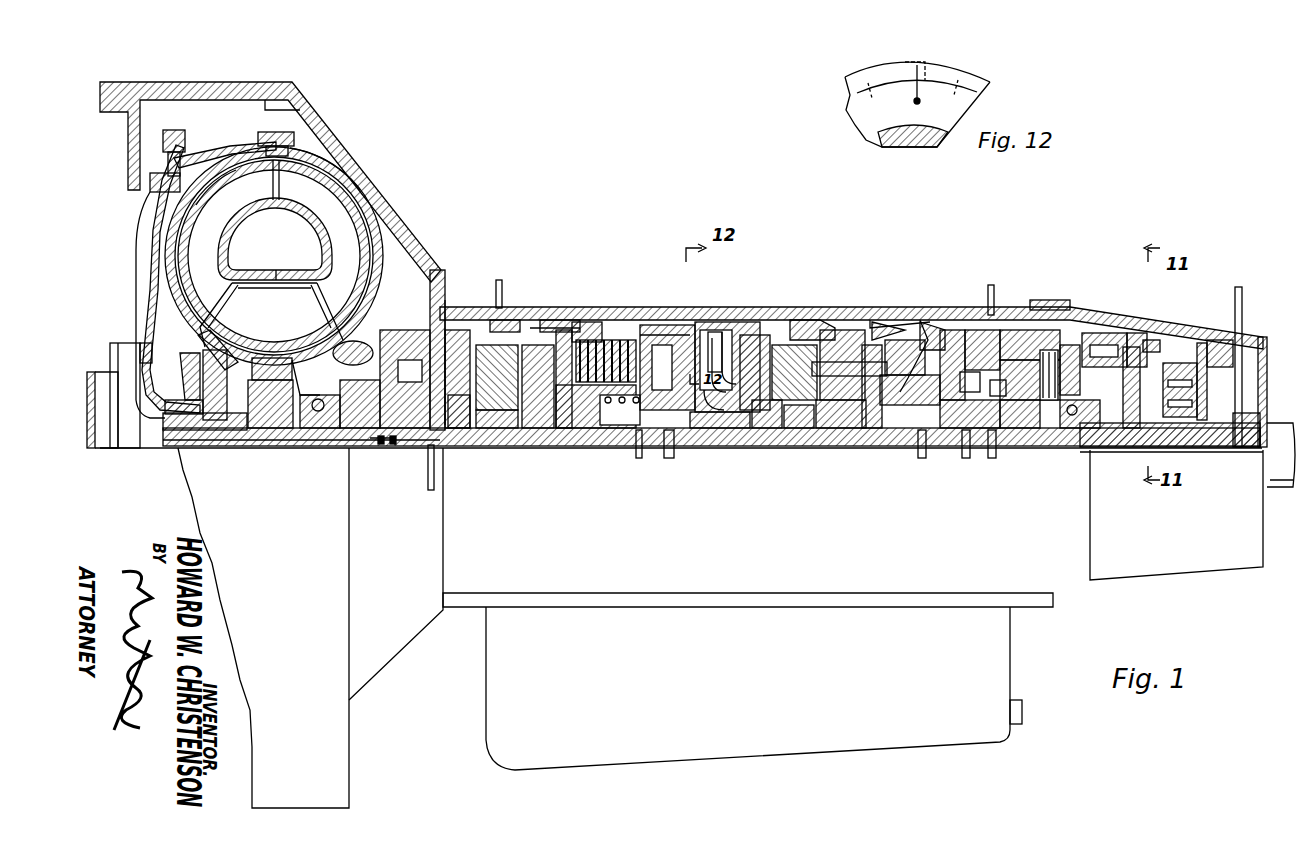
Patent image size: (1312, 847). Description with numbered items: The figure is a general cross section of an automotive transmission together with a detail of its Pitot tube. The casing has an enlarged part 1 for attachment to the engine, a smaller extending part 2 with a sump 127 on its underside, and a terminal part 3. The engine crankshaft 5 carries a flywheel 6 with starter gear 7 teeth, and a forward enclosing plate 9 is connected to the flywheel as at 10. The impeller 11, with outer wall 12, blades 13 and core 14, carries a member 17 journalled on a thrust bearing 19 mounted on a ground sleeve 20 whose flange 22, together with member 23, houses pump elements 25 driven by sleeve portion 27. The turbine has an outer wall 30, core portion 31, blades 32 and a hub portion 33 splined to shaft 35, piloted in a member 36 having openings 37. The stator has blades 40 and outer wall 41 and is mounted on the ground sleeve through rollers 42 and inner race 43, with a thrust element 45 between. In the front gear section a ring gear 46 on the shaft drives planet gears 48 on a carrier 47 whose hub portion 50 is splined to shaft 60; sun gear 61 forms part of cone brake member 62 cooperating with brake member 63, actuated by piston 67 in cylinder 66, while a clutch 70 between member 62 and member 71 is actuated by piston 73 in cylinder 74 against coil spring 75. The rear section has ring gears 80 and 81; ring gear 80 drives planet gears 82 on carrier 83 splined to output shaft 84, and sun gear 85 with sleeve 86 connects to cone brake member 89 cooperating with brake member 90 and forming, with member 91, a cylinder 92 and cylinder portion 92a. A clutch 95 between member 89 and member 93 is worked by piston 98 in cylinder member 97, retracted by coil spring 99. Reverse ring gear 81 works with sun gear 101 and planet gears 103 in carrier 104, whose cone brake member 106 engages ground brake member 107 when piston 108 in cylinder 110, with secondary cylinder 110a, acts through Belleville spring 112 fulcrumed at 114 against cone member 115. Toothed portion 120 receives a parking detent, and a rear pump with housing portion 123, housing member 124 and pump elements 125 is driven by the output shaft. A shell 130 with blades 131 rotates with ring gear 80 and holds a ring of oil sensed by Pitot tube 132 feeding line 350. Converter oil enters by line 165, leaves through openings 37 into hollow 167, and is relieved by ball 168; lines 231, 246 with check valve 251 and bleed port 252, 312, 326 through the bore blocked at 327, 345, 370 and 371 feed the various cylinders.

In FIG. 1, the enlarged part 1 is at (220, 88).
In FIG. 1, the extending part 2 is at (782, 308).
In FIG. 1, the terminal part 3 is at (1240, 566).
In FIG. 1, the crankshaft 5 is at (100, 370).
In FIG. 1, the flywheel 6 is at (136, 268).
In FIG. 1, the starter gear 7 is at (174, 140).
In FIG. 1, the forward enclosing plate 9 is at (152, 230).
In FIG. 1, the connection 10 is at (150, 186).
In FIG. 1, the impeller 11 is at (328, 158).
In FIG. 1, the outer wall 12 is at (346, 183).
In FIG. 1, the blades 13 is at (350, 203).
In FIG. 1, the core 14 is at (320, 222).
In FIG. 1, the member 17 is at (366, 346).
In FIG. 1, the bearing 19 is at (316, 412).
In FIG. 1, the ground sleeve 20 is at (335, 428).
In FIG. 1, the flange 22 is at (452, 322).
In FIG. 1, the member 23 is at (440, 300).
In FIG. 1, the pump elements 25 is at (410, 352).
In FIG. 1, the sleeve portion 27 is at (360, 428).
In FIG. 1, the outer wall 30 is at (222, 155).
In FIG. 1, the core portion 31 is at (232, 226).
In FIG. 1, the blades 32 is at (215, 193).
In FIG. 1, the hub portion 33 is at (226, 428).
In FIG. 1, the shaft 35 is at (196, 446).
In FIG. 1, the member 36 is at (178, 405).
In FIG. 1, the openings 37 is at (160, 382).
In FIG. 1, the blades 40 is at (271, 315).
In FIG. 1, the outer wall 41 is at (212, 356).
In FIG. 1, the rollers 42 is at (270, 358).
In FIG. 1, the inner race 43 is at (262, 428).
In FIG. 1, the thrust element 45 is at (300, 392).
In FIG. 1, the ring gear 46 is at (488, 350).
In FIG. 1, the carrier 47 is at (452, 446).
In FIG. 1, the planet gears 48 is at (497, 377).
In FIG. 1, the hub portion 50 is at (484, 446).
In FIG. 1, the shaft 60 is at (512, 446).
In FIG. 1, the sun gear 61 is at (534, 446).
In FIG. 1, the cone-shaped brake member 62 is at (540, 320).
In FIG. 1, the internally coned brake member 63 is at (580, 320).
In FIG. 1, the cylinder 66 is at (510, 320).
In FIG. 1, the piston 67 is at (540, 318).
In FIG. 1, the clutch 70 is at (586, 330).
In FIG. 1, the member 71 is at (552, 446).
In FIG. 1, the piston 73 is at (626, 328).
In FIG. 1, the cylinder 74 is at (636, 334).
In FIG. 1, the coil spring 75 is at (586, 446).
In FIG. 1, the ring gear 80 is at (756, 338).
In FIG. 1, the ring gear 81 is at (822, 320).
In FIG. 1, the planet gears 82 is at (784, 371).
In FIG. 1, the carrier 83 is at (719, 446).
In FIG. 1, the final output shaft 84 is at (758, 446).
In FIG. 1, the sun gear 85 is at (784, 446).
In FIG. 1, the sleeve 86 is at (812, 446).
In FIG. 1, the cone brake member 89 is at (1018, 330).
In FIG. 1, the internally coned brake member 90 is at (1040, 338).
In FIG. 1, the member 91 is at (968, 328).
In FIG. 1, the cylinder 92 is at (1045, 366).
In FIG. 1, the cylinder portion 92a is at (1026, 423).
In FIG. 1, the member 93 is at (1062, 446).
In FIG. 1, the multiple disc clutch 95 is at (1064, 345).
In FIG. 1, the cylinder member 97 is at (1110, 340).
In FIG. 1, the piston 98 is at (1138, 340).
In FIG. 1, the coil spring 99 is at (1072, 446).
In FIG. 1, the sun gear 101 is at (856, 446).
In FIG. 1, the planet gears 103 is at (842, 365).
In FIG. 1, the carrier 104 is at (878, 446).
In FIG. 1, the cone-shaped brake member 106 is at (870, 318).
In FIG. 1, the internally coned ground brake member 107 is at (880, 322).
In FIG. 1, the piston 108 is at (922, 322).
In FIG. 1, the cylinder 110 is at (952, 328).
In FIG. 1, the secondary cylinder 110a is at (969, 414).
In FIG. 1, the Belleville spring 112 is at (910, 386).
In FIG. 1, the fulcrum 114 is at (912, 320).
In FIG. 1, the cone member 115 is at (905, 356).
In FIG. 1, the toothed portion 120 is at (1160, 340).
In FIG. 1, the portion of housing 123 is at (1205, 408).
In FIG. 1, the housing member 124 is at (1168, 388).
In FIG. 1, the pump elements 125 is at (1207, 380).
In FIG. 1, the sump 127 is at (486, 676).
In FIG. 1, the shell 130 is at (720, 330).
In FIG. 12, the shell 130 is at (950, 72).
In FIG. 1, the blades 131 is at (700, 322).
In FIG. 12, the blades 131 is at (870, 80).
In FIG. 1, the Pitot tube 132 is at (714, 330).
In FIG. 12, the Pitot tube 132 is at (912, 62).
In FIG. 1, the line 165 is at (428, 488).
In FIG. 1, the hollow 167 is at (216, 446).
In FIG. 1, the spring pressed ball 168 is at (386, 445).
In FIG. 1, the conduit line 231 is at (922, 458).
In FIG. 1, the line 246 is at (966, 458).
In FIG. 1, the check valve 251 is at (978, 375).
In FIG. 1, the bleed port 252 is at (989, 392).
In FIG. 1, the line 312 is at (992, 458).
In FIG. 1, the line 326 is at (1242, 300).
In FIG. 1, the block 327 is at (1098, 450).
In FIG. 1, the line 345 is at (996, 290).
In FIG. 1, the line 350 is at (669, 458).
In FIG. 1, the line 370 is at (639, 458).
In FIG. 1, the line 371 is at (498, 280).